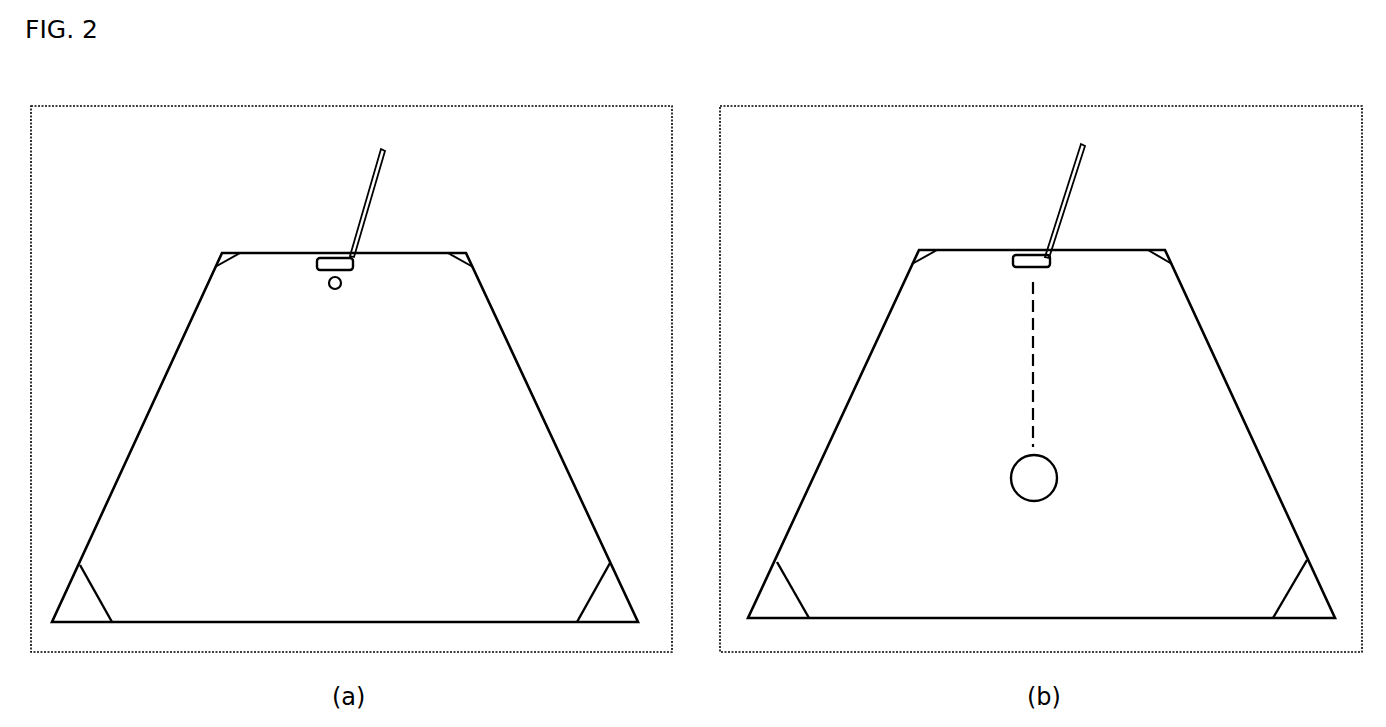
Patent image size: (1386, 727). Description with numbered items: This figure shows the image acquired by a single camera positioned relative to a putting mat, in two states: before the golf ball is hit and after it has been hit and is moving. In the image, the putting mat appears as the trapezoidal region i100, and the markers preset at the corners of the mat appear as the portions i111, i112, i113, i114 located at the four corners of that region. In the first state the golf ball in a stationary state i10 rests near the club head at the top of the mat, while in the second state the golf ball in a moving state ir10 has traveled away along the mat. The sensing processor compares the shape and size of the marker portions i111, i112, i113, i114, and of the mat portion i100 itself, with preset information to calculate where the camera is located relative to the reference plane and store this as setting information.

The putting mat in the image i100 is at (162, 385).
The marker in the image i111 is at (82, 600).
The marker in the image i112 is at (602, 598).
The marker in the image i113 is at (468, 257).
The marker in the image i114 is at (224, 258).
The golf ball in a stationary state in the image i10 is at (328, 285).
The golf ball in a moving state in the image ir10 is at (1058, 478).